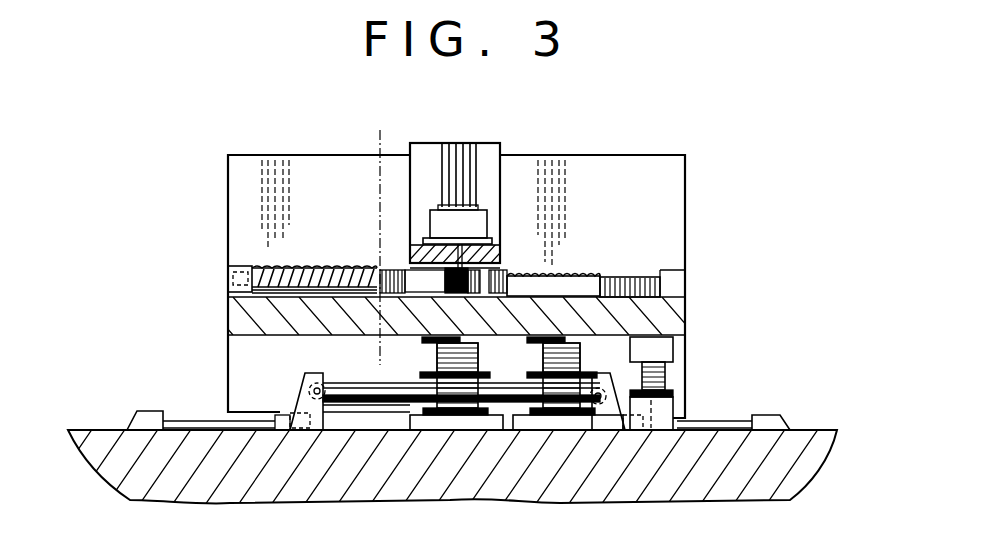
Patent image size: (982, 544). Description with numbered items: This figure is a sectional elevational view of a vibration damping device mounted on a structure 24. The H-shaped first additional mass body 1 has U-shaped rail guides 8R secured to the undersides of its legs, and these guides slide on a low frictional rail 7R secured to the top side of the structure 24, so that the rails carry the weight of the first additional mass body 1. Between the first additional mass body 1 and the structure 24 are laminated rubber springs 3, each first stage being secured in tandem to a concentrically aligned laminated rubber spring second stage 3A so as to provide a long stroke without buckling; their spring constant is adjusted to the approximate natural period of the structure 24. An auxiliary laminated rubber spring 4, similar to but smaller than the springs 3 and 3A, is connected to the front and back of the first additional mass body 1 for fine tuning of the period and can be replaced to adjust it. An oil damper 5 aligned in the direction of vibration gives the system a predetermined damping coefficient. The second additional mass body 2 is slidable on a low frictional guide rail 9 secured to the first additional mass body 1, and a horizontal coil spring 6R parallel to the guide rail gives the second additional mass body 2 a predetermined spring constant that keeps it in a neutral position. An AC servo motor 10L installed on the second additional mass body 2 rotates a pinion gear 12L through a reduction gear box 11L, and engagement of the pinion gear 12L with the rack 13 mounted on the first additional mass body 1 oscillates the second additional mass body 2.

The first additional mass body 1 is at (598, 178).
The second additional mass body 2 is at (485, 165).
The laminated rubber spring 3 is at (470, 400).
The laminated rubber spring second stage 3A is at (437, 348).
The auxiliary laminated rubber spring 4 is at (665, 375).
The oil damper 5 is at (393, 400).
The horizontal coil spring 6R is at (271, 268).
The low frictional rail 7R is at (197, 426).
The U-shaped rail guide 8R is at (290, 431).
The low frictional guide rail 9 is at (317, 292).
The AC servo motor 10L is at (446, 146).
The reduction gear box 11L is at (428, 210).
The pinion gear 12L is at (445, 276).
The rack 13 is at (613, 277).
The structure 24 is at (528, 481).